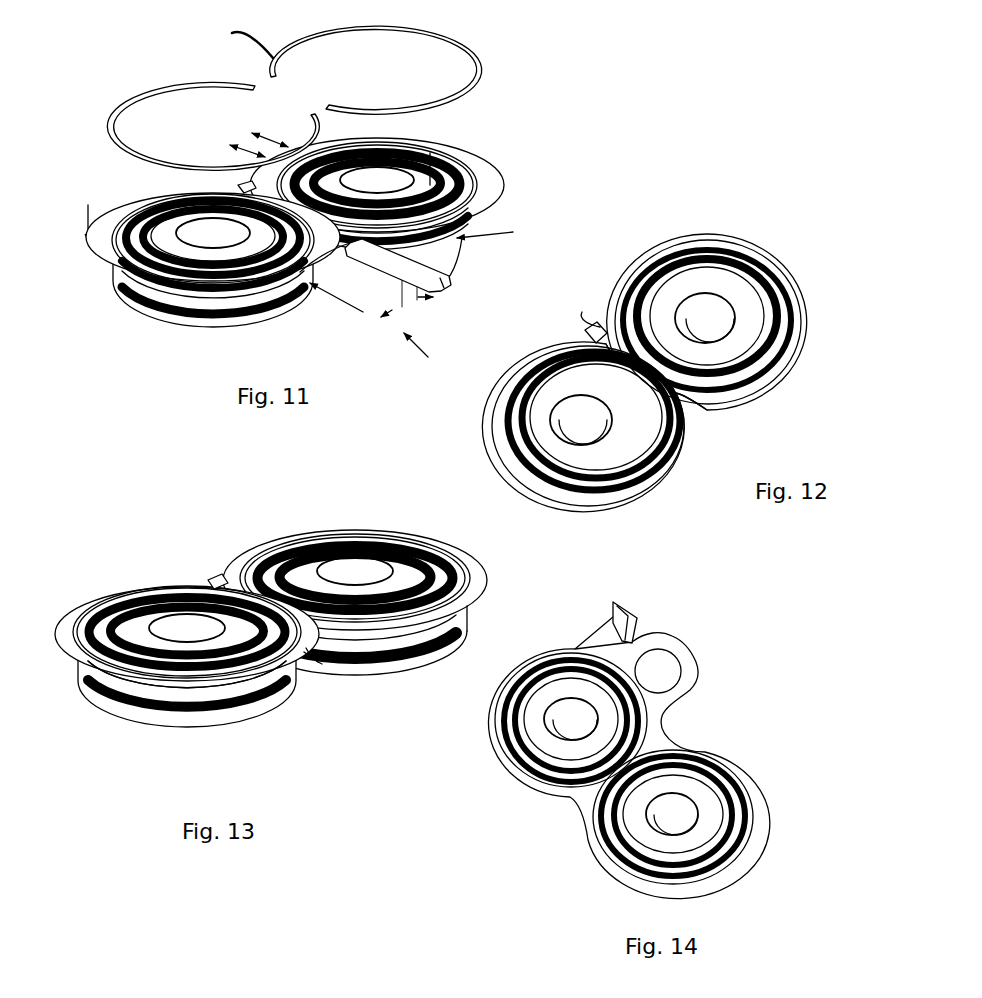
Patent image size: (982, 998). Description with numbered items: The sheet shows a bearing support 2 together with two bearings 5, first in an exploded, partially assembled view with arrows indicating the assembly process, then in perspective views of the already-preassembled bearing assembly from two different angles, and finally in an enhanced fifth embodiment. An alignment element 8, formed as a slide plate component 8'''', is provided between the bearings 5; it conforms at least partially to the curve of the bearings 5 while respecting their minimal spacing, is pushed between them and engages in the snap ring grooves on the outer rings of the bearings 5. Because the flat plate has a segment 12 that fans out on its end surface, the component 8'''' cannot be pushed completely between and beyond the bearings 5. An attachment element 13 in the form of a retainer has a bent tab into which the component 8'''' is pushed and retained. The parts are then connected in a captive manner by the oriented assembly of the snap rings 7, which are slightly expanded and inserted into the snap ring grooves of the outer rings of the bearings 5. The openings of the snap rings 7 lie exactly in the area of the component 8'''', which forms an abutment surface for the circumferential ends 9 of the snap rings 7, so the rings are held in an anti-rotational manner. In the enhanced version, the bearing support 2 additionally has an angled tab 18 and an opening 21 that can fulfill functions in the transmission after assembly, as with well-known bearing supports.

In FIG. 11, the bearing support 2 is at (498, 173).
In FIG. 12, the bearing support 2 is at (722, 242).
In FIG. 13, the bearing support 2 is at (355, 580).
In FIG. 14, the bearing support 2 is at (660, 743).
In FIG. 11, the bearings 5 is at (207, 308).
In FIG. 12, the bearings 5 is at (737, 298).
In FIG. 13, the bearings 5 is at (190, 700).
In FIG. 14, the bearings 5 is at (547, 733).
In FIG. 11, the snap rings 7 is at (169, 90).
In FIG. 13, the snap rings 7 is at (247, 670).
In FIG. 11, the alignment element 8 is at (406, 294).
In FIG. 12, the alignment element 8 is at (691, 401).
In FIG. 13, the alignment element 8 is at (314, 656).
In FIG. 11, the component formed as a slide plate 8'''' is at (481, 282).
In FIG. 12, the component formed as a slide plate 8'''' is at (695, 394).
In FIG. 13, the component formed as a slide plate 8'''' is at (344, 692).
In FIG. 11, the circumferential ends 9 is at (291, 76).
In FIG. 11, the segment 12 is at (388, 262).
In FIG. 11, the attachment element 13 is at (238, 187).
In FIG. 13, the attachment element 13 is at (210, 578).
In FIG. 14, the angled tab 18 is at (624, 606).
In FIG. 14, the opening 21 is at (668, 675).